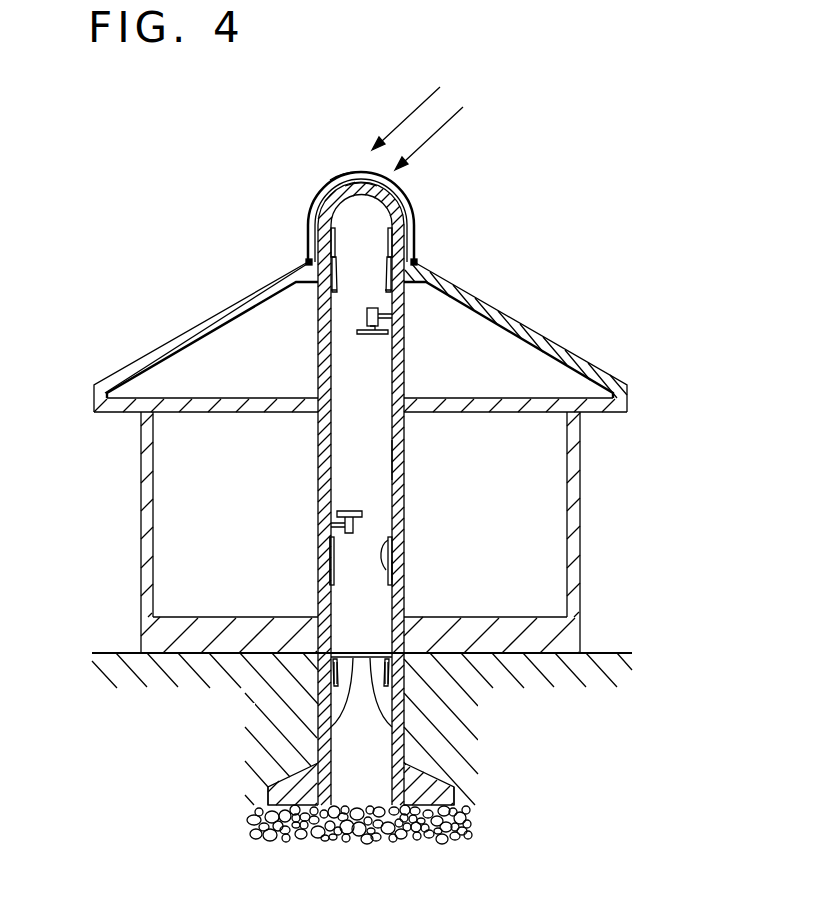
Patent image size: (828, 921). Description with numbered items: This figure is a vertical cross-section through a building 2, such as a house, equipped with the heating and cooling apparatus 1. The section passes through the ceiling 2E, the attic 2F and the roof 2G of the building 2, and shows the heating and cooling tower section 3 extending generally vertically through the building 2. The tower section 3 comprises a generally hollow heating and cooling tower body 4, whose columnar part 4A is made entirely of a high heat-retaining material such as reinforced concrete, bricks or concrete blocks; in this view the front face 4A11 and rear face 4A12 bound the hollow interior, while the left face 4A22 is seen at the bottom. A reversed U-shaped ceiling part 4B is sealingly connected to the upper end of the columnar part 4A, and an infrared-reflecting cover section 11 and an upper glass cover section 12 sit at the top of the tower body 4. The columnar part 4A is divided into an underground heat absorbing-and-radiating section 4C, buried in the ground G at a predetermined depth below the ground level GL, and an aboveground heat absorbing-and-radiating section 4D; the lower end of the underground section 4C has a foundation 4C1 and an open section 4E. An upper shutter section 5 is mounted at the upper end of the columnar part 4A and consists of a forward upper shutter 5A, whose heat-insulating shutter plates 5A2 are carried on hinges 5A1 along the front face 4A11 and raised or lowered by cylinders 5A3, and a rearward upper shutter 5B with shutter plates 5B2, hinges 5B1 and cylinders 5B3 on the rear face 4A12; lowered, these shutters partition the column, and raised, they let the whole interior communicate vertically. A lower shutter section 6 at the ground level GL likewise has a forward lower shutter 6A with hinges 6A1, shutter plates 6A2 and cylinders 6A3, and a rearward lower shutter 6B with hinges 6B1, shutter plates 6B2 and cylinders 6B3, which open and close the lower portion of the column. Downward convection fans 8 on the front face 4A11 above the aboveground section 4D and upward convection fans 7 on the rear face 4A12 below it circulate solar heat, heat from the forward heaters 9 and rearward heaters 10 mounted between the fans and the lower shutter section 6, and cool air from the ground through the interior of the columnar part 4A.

The heating and cooling apparatus 1 is at (202, 298).
The building 2 is at (583, 492).
The ceiling 2E is at (170, 414).
The attic 2F is at (152, 388).
The roof 2G is at (538, 340).
The heating and cooling tower section 3 is at (417, 451).
The heating and cooling tower body 4 is at (466, 575).
The columnar part 4A is at (319, 434).
The front face 4A11 is at (392, 558).
The rear face 4A12 is at (331, 580).
The left face 4A22 is at (346, 775).
The reversed U-shaped ceiling part 4B is at (321, 190).
The underground heat absorbing-and-radiating section 4C is at (350, 782).
The foundation 4C1 is at (272, 796).
The aboveground heat absorbing-and-radiating section 4D is at (322, 462).
The open section 4E is at (372, 800).
The upper shutter section 5 is at (474, 251).
The forward upper shutter 5A is at (474, 251).
The hinges 5A1 is at (416, 263).
The shutter plates 5A2 is at (396, 216).
The cylinders 5A3 is at (410, 290).
The rearward upper shutter 5B is at (278, 230).
The hinges 5B1 is at (332, 262).
The shutter plates 5B2 is at (331, 228).
The cylinders 5B3 is at (306, 262).
The lower shutter section 6 is at (355, 673).
The forward lower shutter 6A is at (451, 659).
The hinges 6A1 is at (396, 660).
The shutter plates 6A2 is at (388, 690).
The cylinders 6A3 is at (389, 683).
The rearward lower shutter 6B is at (265, 673).
The hinges 6B1 is at (331, 655).
The shutter plates 6B2 is at (337, 692).
The cylinders 6B3 is at (334, 682).
The upward convection fans 7 is at (337, 525).
The downward convection fans 8 is at (367, 316).
The forward heaters 9 is at (391, 540).
The rearward heaters 10 is at (331, 552).
The infrared-reflecting cover section 11 is at (366, 183).
The upper glass cover section 12 is at (338, 177).
The ground G is at (628, 669).
The ground level GL is at (612, 653).